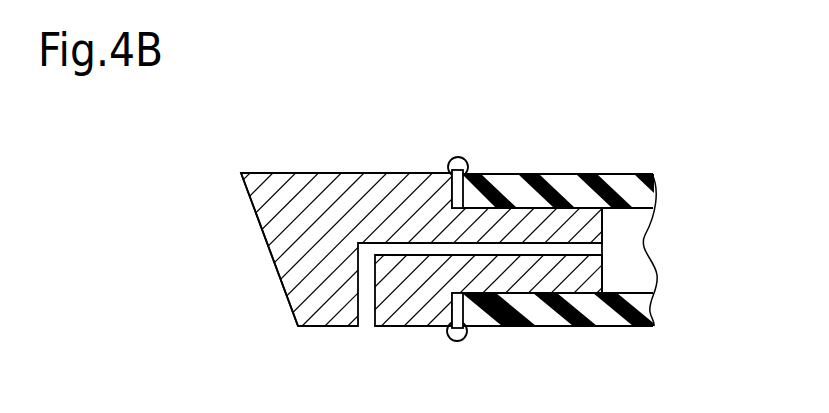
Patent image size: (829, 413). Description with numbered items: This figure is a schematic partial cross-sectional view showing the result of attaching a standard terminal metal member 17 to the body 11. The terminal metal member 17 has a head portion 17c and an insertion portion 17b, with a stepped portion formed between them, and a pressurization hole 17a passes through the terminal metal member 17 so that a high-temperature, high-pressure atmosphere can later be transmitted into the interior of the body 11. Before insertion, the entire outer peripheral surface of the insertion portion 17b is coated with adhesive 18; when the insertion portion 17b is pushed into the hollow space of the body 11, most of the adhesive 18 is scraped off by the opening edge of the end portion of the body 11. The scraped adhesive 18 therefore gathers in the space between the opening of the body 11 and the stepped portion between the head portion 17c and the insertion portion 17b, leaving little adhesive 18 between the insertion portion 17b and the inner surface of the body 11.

The body 11 is at (552, 315).
The standard terminal metal member 17 is at (234, 202).
The pressurization hole 17a is at (374, 292).
The insertion portion 17b is at (515, 218).
The head portion 17c is at (282, 258).
The adhesive 18 is at (457, 157).